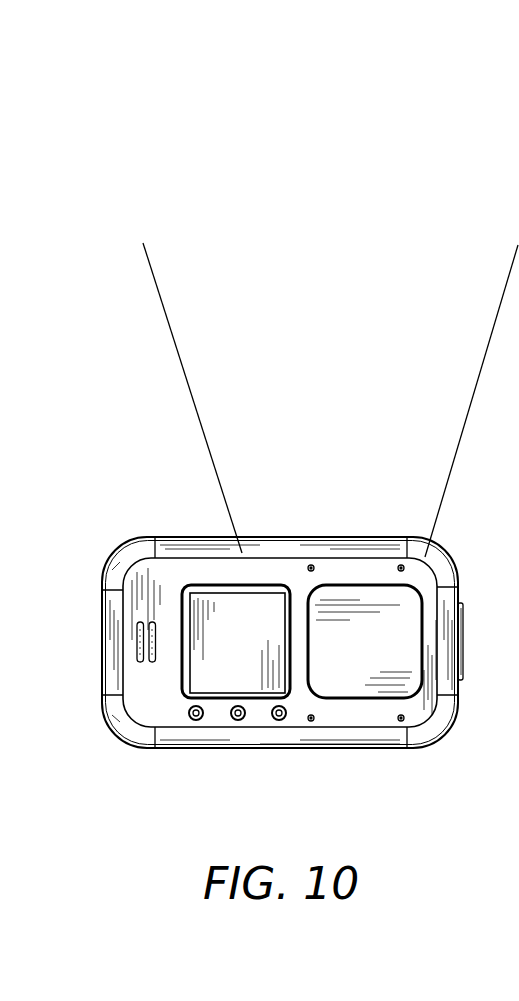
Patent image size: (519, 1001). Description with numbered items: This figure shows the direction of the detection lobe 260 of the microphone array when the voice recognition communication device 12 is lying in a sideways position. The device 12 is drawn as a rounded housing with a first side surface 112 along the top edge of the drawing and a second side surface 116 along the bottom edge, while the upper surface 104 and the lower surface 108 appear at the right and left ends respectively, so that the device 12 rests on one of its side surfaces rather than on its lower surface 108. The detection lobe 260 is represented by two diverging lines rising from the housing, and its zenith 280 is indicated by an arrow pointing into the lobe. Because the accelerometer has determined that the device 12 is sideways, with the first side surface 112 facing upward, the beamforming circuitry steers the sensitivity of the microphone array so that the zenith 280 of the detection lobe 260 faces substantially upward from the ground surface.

The zenith 280 is at (185, 190).
The detection lobe 260 is at (460, 447).
The device 12 is at (147, 692).
The first side surface 112 is at (345, 548).
The second side surface 116 is at (308, 748).
The lower surface 108 is at (118, 643).
The upper surface 104 is at (443, 645).